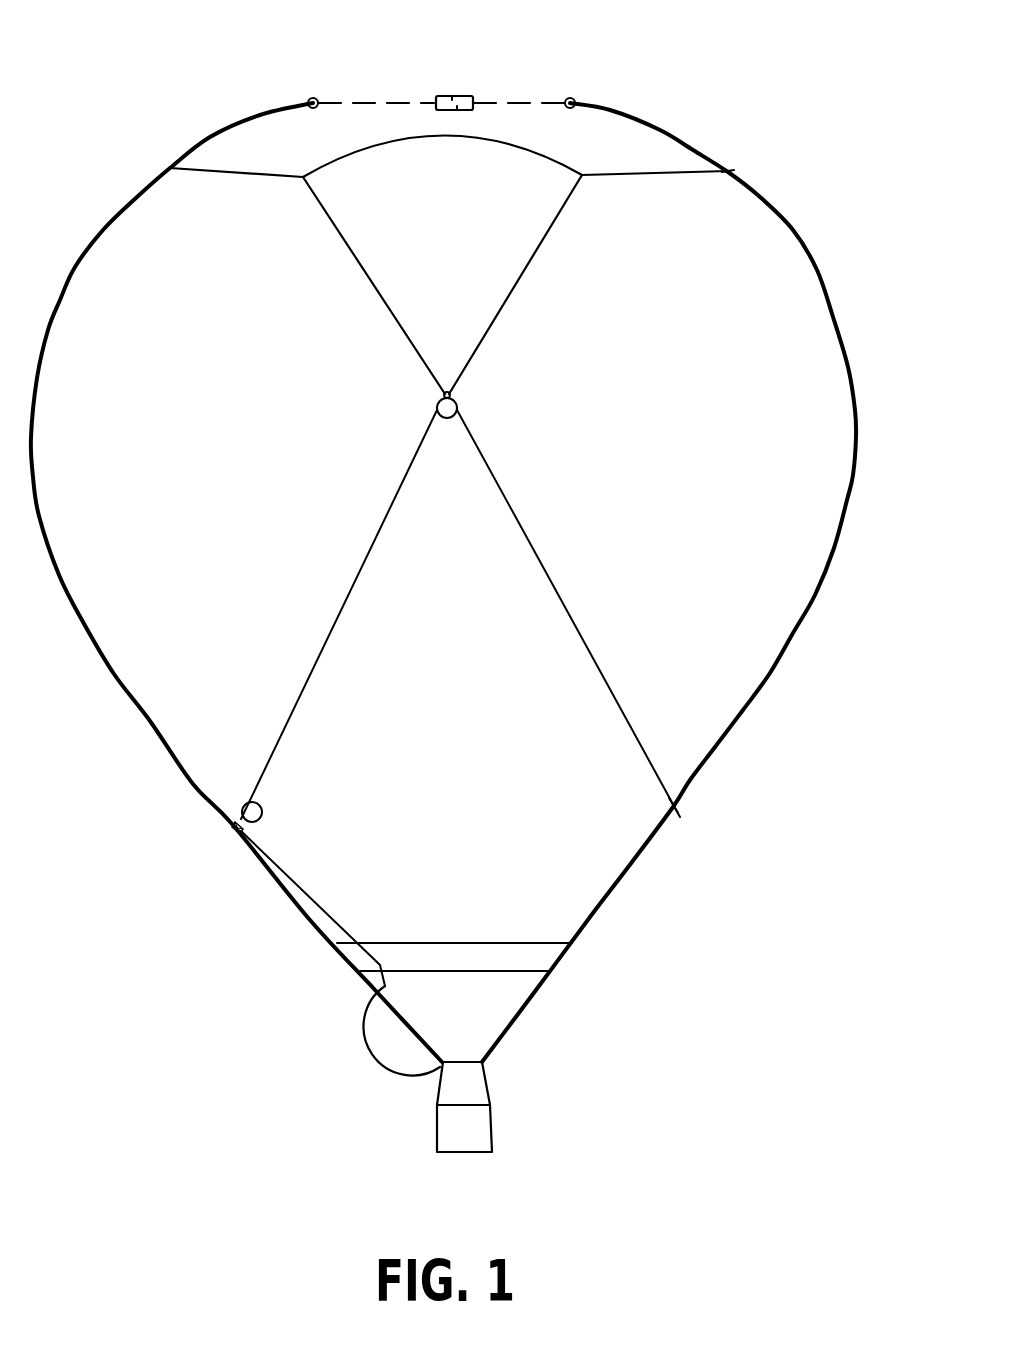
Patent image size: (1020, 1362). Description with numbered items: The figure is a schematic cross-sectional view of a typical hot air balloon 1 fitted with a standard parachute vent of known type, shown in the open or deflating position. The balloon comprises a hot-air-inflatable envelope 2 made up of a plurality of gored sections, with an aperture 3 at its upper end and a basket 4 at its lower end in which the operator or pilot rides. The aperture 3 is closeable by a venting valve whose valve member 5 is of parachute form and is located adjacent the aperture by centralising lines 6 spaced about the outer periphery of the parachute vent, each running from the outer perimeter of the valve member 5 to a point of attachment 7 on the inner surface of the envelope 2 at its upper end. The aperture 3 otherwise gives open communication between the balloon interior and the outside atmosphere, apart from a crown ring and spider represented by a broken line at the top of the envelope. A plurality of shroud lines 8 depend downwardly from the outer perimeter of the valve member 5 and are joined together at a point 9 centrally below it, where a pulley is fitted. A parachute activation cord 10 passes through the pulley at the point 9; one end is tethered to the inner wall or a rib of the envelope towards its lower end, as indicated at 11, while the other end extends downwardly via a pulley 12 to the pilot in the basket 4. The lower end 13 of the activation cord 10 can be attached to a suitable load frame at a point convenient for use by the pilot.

The hot air balloon 1 is at (828, 262).
The envelope 2 is at (853, 475).
The aperture 3 is at (503, 75).
The basket 4 is at (492, 1130).
The valve member 5 is at (405, 137).
The centralising lines 6 is at (225, 173).
The attachment point on envelope 7 is at (728, 174).
The shroud lines 8 is at (518, 290).
The point 9 is at (458, 404).
The parachute activation cord 10 is at (320, 656).
The tethering point 11 is at (680, 812).
The pulley 12 is at (236, 830).
The lower end of the activation cord 13 is at (385, 1055).